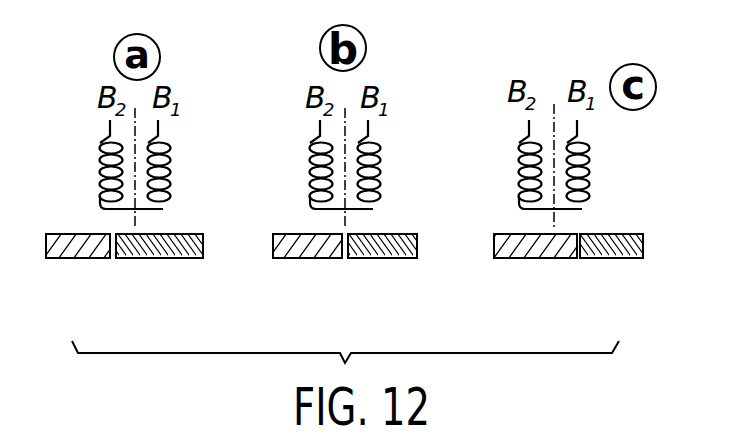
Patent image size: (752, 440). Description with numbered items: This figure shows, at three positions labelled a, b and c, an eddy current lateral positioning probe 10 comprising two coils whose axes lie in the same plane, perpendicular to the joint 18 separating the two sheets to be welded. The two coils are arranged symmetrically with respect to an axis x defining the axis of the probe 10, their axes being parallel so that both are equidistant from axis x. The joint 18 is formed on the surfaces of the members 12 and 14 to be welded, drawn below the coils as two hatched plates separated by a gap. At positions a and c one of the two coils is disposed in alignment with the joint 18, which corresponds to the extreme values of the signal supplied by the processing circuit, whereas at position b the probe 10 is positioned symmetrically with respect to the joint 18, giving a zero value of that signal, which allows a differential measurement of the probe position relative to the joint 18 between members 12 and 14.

The probe 10 is at (96, 181).
The member 12 is at (78, 256).
The member 14 is at (172, 255).
The joint 18 is at (115, 258).